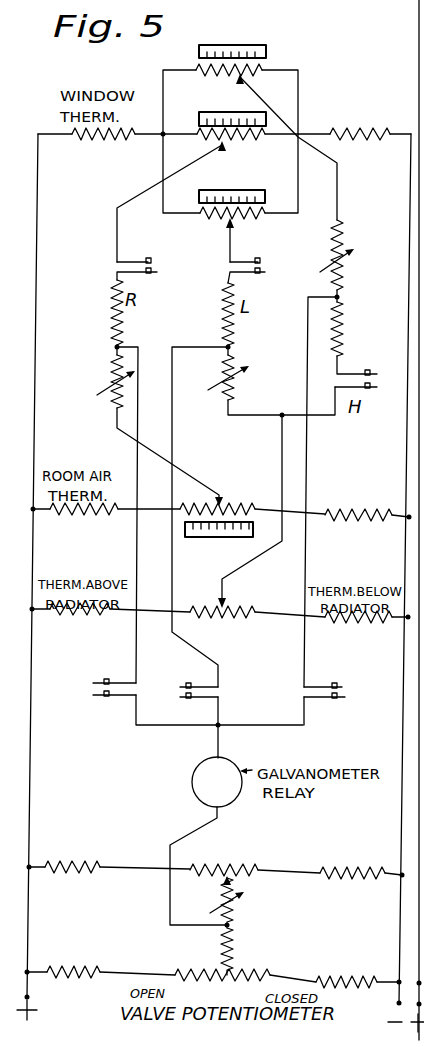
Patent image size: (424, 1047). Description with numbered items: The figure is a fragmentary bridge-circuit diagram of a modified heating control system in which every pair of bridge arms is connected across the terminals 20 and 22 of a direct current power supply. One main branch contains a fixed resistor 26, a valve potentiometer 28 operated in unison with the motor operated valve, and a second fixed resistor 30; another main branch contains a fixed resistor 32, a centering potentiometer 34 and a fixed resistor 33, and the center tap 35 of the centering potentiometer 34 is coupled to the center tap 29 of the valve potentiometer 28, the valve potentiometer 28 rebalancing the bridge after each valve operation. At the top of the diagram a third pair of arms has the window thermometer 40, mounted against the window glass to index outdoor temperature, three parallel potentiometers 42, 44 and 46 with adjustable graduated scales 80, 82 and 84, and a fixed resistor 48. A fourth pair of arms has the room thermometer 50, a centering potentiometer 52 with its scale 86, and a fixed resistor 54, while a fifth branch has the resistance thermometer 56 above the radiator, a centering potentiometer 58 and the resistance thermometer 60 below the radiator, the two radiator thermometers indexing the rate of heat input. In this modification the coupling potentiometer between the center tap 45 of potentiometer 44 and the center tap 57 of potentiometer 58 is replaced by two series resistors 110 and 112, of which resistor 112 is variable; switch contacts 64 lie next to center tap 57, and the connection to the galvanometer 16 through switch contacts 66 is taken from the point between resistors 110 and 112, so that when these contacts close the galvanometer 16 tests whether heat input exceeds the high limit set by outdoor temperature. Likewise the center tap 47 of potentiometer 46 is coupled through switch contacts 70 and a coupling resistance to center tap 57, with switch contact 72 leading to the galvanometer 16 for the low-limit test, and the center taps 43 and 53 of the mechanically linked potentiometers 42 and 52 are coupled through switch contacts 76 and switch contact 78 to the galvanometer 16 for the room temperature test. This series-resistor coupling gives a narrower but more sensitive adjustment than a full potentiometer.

The galvanometer 16 is at (232, 766).
The terminal of direct current power supply 20 is at (32, 784).
The terminal of direct current power supply 22 is at (403, 808).
The fixed resistor 26 is at (62, 972).
The valve potentiometer 28 is at (255, 977).
The center tap of valve potentiometer 29 is at (232, 965).
The fixed resistor 30 is at (348, 978).
The fixed resistor 32 is at (72, 865).
The fixed resistor 33 is at (352, 870).
The centering potentiometer 34 is at (222, 868).
The center tap of centering potentiometer 35 is at (222, 888).
The window thermometer 40 is at (95, 140).
The potentiometer 42 is at (245, 139).
The center tap of potentiometer 42 43 is at (220, 149).
The potentiometer 44 is at (262, 70).
The center tap of potentiometer 44 45 is at (246, 86).
The potentiometer 46 is at (258, 216).
The center tap of potentiometer 46 47 is at (232, 246).
The fixed resistor 48 is at (368, 134).
The room thermometer 50 is at (88, 512).
The centering potentiometer 52 is at (224, 497).
The center tap of potentiometer 52 53 is at (236, 512).
The fixed resistor 54 is at (370, 512).
The resistance thermometer above radiator 56 is at (82, 612).
The center tap of centering potentiometer 58 57 is at (224, 590).
The centering potentiometer 58 is at (218, 616).
The resistance thermometer below radiator 60 is at (362, 621).
The switch contacts 64 is at (360, 372).
The switch contacts 66 is at (347, 697).
The switch contacts 70 is at (235, 270).
The switch contact 72 is at (178, 692).
The switch contacts 76 is at (113, 267).
The switch contact 78 is at (94, 691).
The graduated scale 80 is at (222, 116).
The graduated scale 82 is at (247, 46).
The graduated scale 84 is at (241, 192).
The graduated scale 86 is at (218, 537).
The resistor 110 is at (345, 330).
The variable resistor 112 is at (348, 272).